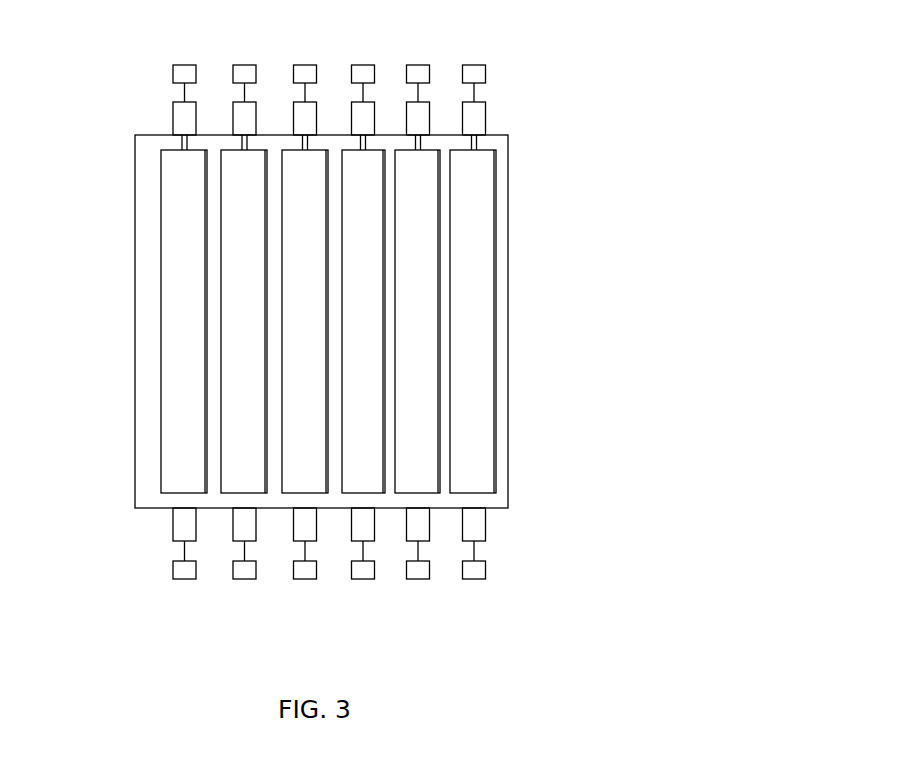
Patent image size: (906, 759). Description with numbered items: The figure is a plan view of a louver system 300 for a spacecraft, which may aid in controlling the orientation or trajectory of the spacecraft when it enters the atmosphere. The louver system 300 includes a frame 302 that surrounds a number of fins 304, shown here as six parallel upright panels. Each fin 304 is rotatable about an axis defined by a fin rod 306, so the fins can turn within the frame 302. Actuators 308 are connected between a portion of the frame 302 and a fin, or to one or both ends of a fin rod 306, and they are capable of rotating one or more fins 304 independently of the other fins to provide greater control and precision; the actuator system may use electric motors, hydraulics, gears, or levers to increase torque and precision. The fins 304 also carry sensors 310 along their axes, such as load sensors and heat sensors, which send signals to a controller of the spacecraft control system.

The louver system 300 is at (690, 68).
The frame 302 is at (145, 233).
The fins 304 is at (301, 245).
The fin rod 306 is at (183, 552).
The actuators 308 is at (173, 112).
The sensors 310 is at (308, 575).